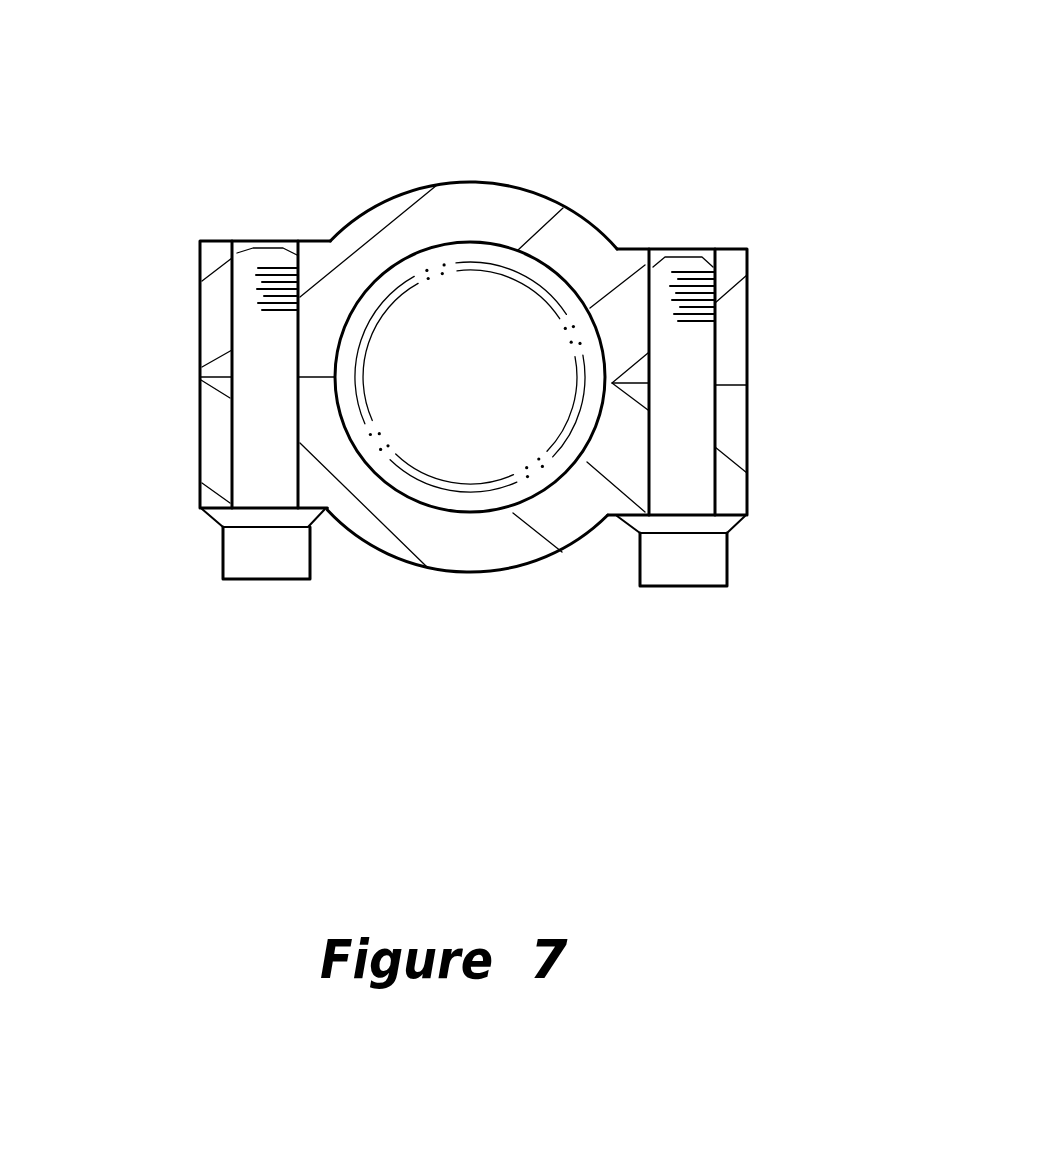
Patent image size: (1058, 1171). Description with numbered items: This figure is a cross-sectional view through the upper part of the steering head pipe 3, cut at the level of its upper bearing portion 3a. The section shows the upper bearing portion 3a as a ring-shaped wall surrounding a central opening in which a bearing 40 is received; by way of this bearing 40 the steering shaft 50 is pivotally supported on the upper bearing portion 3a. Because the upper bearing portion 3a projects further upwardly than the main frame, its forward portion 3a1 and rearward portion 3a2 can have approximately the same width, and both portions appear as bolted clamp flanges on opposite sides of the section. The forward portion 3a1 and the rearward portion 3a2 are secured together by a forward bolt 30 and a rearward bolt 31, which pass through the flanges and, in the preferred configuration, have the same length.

The steering head pipe 3 is at (391, 174).
The upper bearing portion 3a is at (587, 252).
The forward portion 3a1 is at (214, 297).
The rearward portion 3a2 is at (717, 292).
The bearing 40 is at (482, 258).
The steering shaft 50 is at (590, 395).
The forward bolt 30 is at (236, 565).
The rearward bolt 31 is at (695, 562).